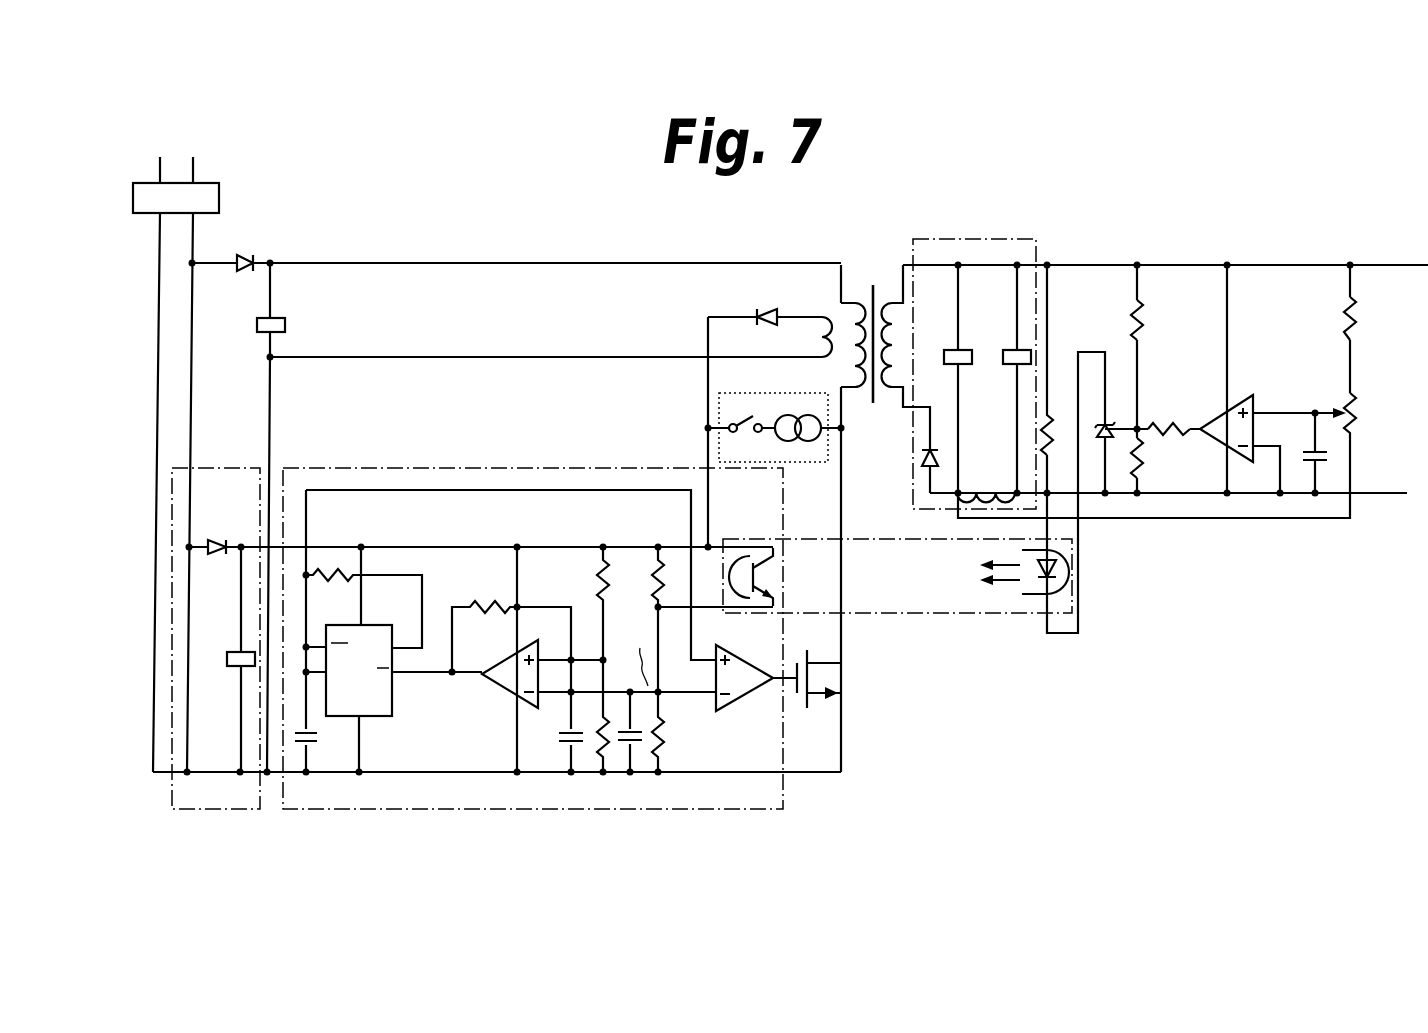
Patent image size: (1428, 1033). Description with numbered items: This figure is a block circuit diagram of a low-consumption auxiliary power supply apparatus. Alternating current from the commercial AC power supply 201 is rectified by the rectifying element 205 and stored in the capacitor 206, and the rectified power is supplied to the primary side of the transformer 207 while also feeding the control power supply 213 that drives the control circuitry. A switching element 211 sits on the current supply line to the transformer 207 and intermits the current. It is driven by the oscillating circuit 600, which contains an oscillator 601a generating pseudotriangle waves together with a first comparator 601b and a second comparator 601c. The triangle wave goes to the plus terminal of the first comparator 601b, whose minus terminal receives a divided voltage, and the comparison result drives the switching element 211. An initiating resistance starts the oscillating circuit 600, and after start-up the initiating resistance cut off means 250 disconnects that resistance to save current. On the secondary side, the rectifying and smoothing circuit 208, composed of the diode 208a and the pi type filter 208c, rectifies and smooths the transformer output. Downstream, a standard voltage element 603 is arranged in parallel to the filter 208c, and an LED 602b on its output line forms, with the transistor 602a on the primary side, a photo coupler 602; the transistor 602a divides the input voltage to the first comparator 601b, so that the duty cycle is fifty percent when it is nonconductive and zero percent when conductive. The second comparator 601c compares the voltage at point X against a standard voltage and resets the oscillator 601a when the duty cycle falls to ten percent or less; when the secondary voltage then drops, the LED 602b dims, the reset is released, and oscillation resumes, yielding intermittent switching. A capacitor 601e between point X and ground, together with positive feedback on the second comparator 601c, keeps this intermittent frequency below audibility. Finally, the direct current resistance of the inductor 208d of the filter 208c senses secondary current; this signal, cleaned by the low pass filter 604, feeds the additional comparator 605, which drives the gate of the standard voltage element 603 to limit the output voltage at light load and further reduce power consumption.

The commercial AC power supply 201 is at (219, 198).
The rectifying element 205 is at (243, 253).
The capacitor 206 is at (285, 325).
The transformer 207 is at (858, 290).
The rectifying and smoothing circuit 208 is at (950, 382).
The diode 208a is at (928, 460).
The pi type filter 208c is at (983, 305).
The inductor 208d is at (985, 497).
The switching element 211 is at (828, 682).
The control power supply 213 is at (172, 578).
The initiating resistance cut off means 250 is at (757, 397).
The oscillating circuit 600 is at (533, 638).
The oscillator 601a is at (377, 717).
The first comparator 601b is at (742, 700).
The second comparator 601c is at (500, 688).
The capacitor 601e is at (618, 740).
The photo coupler 602 is at (916, 591).
The transistor 602a is at (765, 553).
The LED 602b is at (1052, 583).
The standard voltage element 603 is at (1116, 420).
The low pass filter 604 is at (1327, 455).
The additional comparator 605 is at (1243, 397).